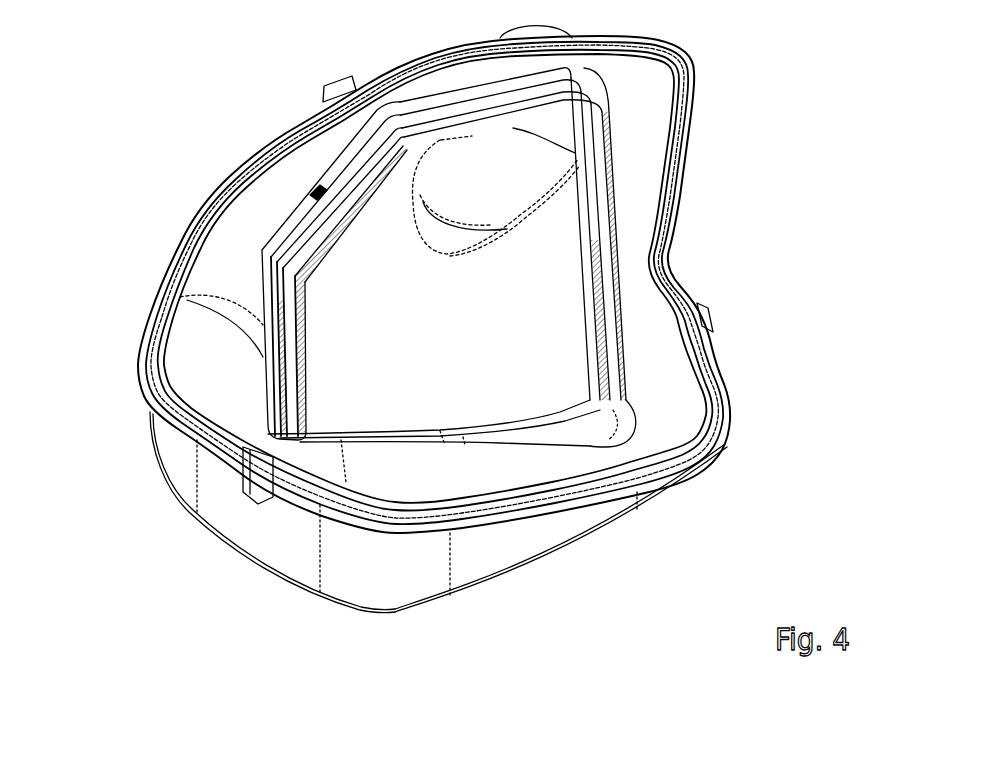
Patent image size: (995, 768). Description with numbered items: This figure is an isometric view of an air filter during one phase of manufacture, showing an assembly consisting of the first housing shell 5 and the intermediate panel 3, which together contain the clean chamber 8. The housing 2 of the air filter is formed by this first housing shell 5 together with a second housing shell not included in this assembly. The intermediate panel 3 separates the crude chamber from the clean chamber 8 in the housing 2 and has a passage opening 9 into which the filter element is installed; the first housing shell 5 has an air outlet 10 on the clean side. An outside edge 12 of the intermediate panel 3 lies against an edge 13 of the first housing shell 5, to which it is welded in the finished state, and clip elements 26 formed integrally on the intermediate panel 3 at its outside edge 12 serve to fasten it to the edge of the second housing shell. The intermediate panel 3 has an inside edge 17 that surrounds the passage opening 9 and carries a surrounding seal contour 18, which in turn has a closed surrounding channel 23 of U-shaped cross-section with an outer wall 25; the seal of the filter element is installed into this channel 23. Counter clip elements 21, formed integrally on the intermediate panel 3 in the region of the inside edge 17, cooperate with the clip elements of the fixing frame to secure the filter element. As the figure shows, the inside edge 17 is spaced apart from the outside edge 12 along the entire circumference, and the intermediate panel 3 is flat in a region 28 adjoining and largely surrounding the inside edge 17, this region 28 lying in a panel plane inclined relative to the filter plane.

The housing 2 is at (612, 542).
The intermediate panel 3 is at (680, 256).
The first housing shell 5 is at (525, 543).
The clean chamber 8 is at (442, 339).
The passage opening 9 is at (565, 245).
The air outlet 10 is at (553, 130).
The outside edge 12 is at (153, 392).
The edge 13 is at (175, 430).
The inside edge 17 is at (595, 318).
The seal contour 18 is at (393, 112).
The counter clip elements 21 is at (318, 190).
The channel 23 is at (308, 240).
The outer wall 25 is at (612, 425).
The clip elements 26 is at (333, 91).
The region 28 is at (645, 93).